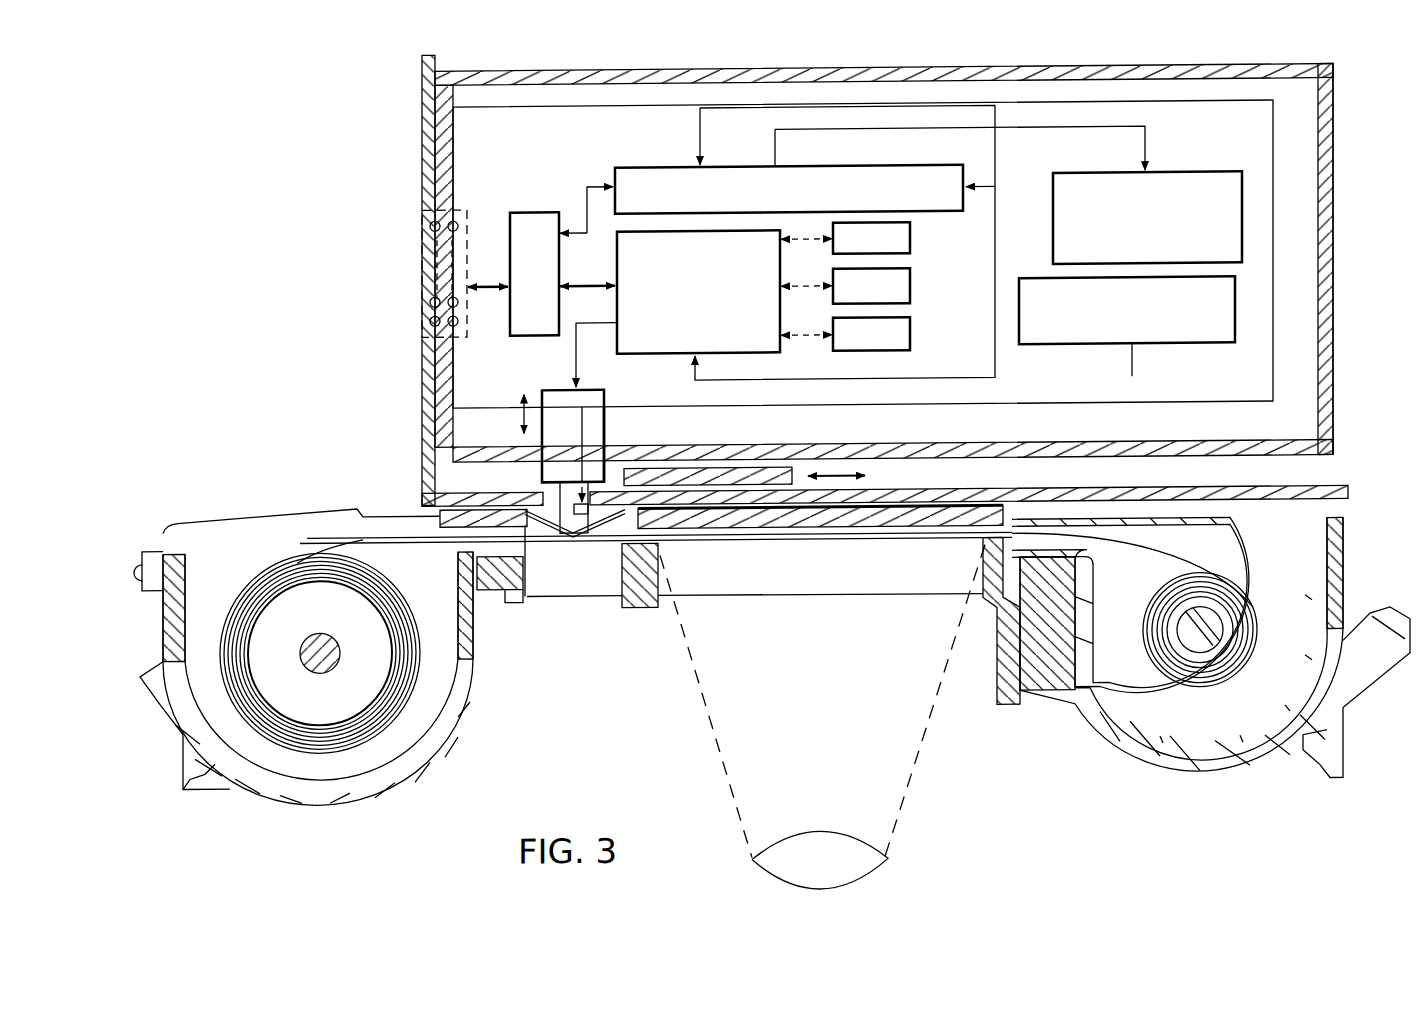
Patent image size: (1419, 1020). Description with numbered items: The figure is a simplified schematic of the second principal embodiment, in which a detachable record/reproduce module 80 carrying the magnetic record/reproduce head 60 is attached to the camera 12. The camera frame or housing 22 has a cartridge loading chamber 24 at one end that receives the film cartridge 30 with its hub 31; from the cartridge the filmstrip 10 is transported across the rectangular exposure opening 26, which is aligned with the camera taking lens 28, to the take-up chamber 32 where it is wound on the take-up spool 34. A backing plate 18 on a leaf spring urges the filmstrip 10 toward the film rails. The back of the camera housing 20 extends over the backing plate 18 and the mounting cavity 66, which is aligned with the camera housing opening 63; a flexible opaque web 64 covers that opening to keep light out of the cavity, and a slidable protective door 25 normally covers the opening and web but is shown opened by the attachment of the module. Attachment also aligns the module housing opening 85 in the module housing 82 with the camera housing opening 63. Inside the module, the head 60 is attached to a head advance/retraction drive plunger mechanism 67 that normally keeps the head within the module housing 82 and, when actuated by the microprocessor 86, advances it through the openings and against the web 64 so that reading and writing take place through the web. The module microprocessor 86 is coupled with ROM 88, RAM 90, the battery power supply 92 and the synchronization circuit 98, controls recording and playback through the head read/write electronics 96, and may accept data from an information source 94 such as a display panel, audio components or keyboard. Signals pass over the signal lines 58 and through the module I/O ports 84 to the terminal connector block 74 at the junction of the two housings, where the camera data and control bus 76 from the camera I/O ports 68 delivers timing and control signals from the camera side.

The filmstrip 10 is at (1157, 555).
The camera 12 is at (368, 433).
The backing plate 18 is at (957, 520).
The camera housing 20 is at (418, 140).
The camera housing 22 is at (1123, 747).
The cartridge loading chamber 24 is at (1322, 569).
The protective door 25 is at (700, 475).
The exposure opening 26 is at (885, 573).
The camera taking lens 28 is at (893, 872).
The film cartridge 30 is at (1310, 538).
The film cartridge hub 31 is at (1207, 631).
The take-up chamber 32 is at (408, 724).
The take-up spool 34 is at (337, 663).
The signal lines 58 is at (1237, 411).
The magnetic record/reproduce head 60 is at (585, 544).
The camera housing opening 63 is at (548, 497).
The flexible opaque web 64 is at (607, 527).
The mounting cavity 66 is at (593, 587).
The head advance/retraction drive plunger mechanism 67 is at (560, 388).
The I/O ports 68 is at (414, 283).
The terminal connector block 74 is at (422, 240).
The data and control bus 76 is at (377, 290).
The record/reproduce module 80 is at (556, 125).
The module housing 82 is at (1334, 153).
The I/O ports 84 is at (540, 210).
The module housing opening 85 is at (610, 443).
The microprocessor 86 is at (675, 356).
The ROM 88 is at (912, 237).
The RAM 90 is at (912, 282).
The battery power supply 92 is at (1222, 350).
The information source 94 is at (1215, 175).
The head read/write electronics 96 is at (645, 165).
The synchronization circuit 98 is at (912, 331).